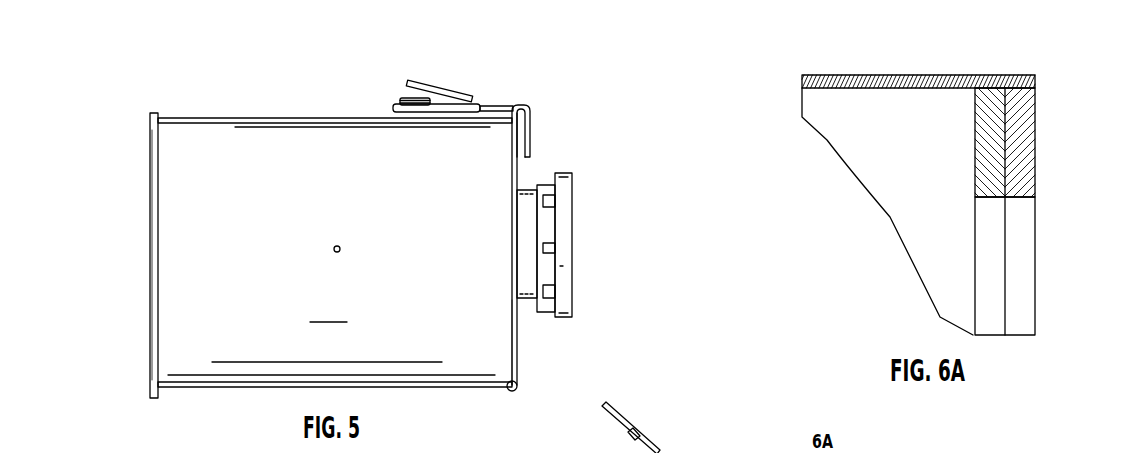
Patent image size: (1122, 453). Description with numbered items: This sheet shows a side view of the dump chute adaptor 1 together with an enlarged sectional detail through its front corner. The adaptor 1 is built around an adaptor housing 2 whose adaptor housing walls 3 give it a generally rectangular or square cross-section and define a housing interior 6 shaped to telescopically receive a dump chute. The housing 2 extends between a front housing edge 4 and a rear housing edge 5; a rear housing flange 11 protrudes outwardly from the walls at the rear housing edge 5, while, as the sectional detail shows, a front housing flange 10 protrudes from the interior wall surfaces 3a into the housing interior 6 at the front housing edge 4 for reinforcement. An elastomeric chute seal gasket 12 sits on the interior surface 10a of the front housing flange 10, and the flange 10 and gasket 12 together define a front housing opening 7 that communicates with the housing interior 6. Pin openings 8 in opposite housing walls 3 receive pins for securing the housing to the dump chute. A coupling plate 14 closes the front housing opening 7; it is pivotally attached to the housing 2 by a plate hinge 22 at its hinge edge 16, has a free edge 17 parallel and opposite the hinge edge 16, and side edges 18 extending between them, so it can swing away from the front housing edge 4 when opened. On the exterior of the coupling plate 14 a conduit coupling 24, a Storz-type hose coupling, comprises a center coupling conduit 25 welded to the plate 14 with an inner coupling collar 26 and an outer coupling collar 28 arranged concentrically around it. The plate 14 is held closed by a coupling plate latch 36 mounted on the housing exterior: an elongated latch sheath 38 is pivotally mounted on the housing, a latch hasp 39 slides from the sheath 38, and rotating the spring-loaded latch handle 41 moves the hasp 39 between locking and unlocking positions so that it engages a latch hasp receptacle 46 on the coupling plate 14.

In FIG. 5, the dump chute adaptor 1 is at (490, 54).
In FIG. 5, the adaptor housing 2 is at (245, 112).
In FIG. 6A, the adaptor housing 2 is at (847, 70).
In FIG. 5, the adaptor housing wall 3 is at (283, 143).
In FIG. 6A, the adaptor housing wall 3 is at (913, 74).
In FIG. 6A, the interior wall surface 3a is at (887, 88).
In FIG. 5, the front housing edge 4 is at (518, 368).
In FIG. 6A, the front housing edge 4 is at (1037, 80).
In FIG. 5, the rear housing edge 5 is at (157, 275).
In FIG. 6A, the housing interior 6 is at (900, 188).
In FIG. 6A, the front housing opening 7 is at (1036, 236).
In FIG. 5, the pin opening 8 is at (340, 247).
In FIG. 6A, the front housing flange 10 is at (1037, 140).
In FIG. 6A, the interior surface 10a is at (1002, 152).
In FIG. 5, the rear housing flange 11 is at (155, 210).
In FIG. 6A, the chute seal gasket 12 is at (973, 128).
In FIG. 5, the coupling plate 14 is at (530, 172).
In FIG. 5, the hinge edge 16 is at (513, 392).
In FIG. 5, the free edge 17 is at (513, 107).
In FIG. 5, the side edge 18 is at (513, 220).
In FIG. 5, the plate hinge 22 is at (522, 385).
In FIG. 5, the conduit coupling 24 is at (583, 288).
In FIG. 5, the center coupling conduit 25 is at (528, 268).
In FIG. 5, the inner coupling collar 26 is at (545, 232).
In FIG. 5, the outer coupling collar 28 is at (562, 238).
In FIG. 5, the coupling plate latch 36 is at (415, 62).
In FIG. 6A, the coupling plate latch 36 is at (952, 75).
In FIG. 5, the latch sheath 38 is at (470, 100).
In FIG. 5, the latch hasp 39 is at (507, 107).
In FIG. 5, the latch handle 41 is at (423, 97).
In FIG. 5, the latch hasp receptacle 46 is at (527, 133).